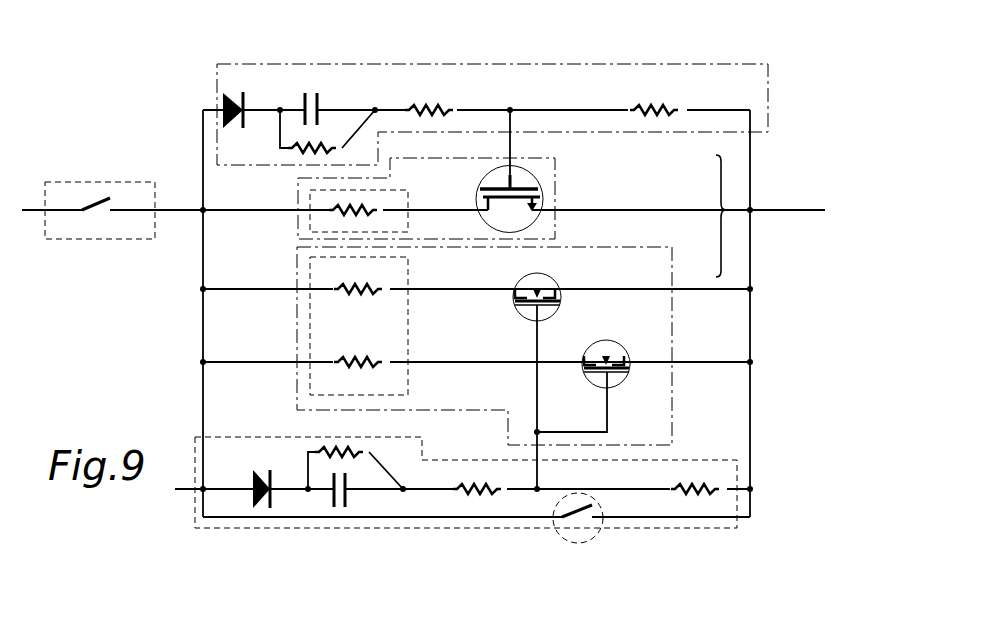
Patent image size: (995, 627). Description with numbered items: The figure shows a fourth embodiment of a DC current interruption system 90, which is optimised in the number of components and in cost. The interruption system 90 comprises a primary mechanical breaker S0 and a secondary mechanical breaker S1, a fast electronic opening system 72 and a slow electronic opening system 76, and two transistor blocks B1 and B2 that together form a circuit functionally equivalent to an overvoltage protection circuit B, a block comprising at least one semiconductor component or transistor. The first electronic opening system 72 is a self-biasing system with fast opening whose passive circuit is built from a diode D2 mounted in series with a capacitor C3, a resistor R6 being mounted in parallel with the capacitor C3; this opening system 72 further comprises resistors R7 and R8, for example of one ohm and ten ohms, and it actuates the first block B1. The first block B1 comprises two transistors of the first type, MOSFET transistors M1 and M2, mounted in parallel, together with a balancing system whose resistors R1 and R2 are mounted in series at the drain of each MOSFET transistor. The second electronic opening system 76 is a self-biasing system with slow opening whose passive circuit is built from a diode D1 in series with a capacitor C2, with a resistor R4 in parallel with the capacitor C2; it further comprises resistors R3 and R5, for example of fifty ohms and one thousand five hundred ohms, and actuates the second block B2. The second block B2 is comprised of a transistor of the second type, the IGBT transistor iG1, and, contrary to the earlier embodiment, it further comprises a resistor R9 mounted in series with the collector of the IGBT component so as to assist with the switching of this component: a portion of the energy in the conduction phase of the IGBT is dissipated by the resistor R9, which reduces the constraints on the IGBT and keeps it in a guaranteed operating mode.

The interruption system 90 is at (800, 118).
The second electronic opening system 76 is at (643, 64).
The first electronic opening system 72 is at (410, 528).
The diode D1 is at (236, 99).
The diode D2 is at (248, 483).
The capacitor C2 is at (327, 106).
The capacitor C3 is at (326, 495).
The balancing resistor R1 is at (359, 326).
The balancing resistor R2 is at (358, 375).
The resistor R3 is at (452, 99).
The resistor R4 is at (327, 131).
The resistor R5 is at (672, 98).
The resistor R6 is at (355, 468).
The resistor R7 is at (478, 479).
The resistor R8 is at (695, 479).
The resistor R9 is at (359, 208).
The IGBT transistor iG1 is at (474, 188).
The MOSFET transistor M1 is at (518, 312).
The MOSFET transistor M2 is at (613, 389).
The overvoltage protection circuit B is at (728, 216).
The first block B1 is at (672, 262).
The second block B2 is at (555, 175).
The primary breaker S0 is at (583, 543).
The secondary breaker S1 is at (87, 239).